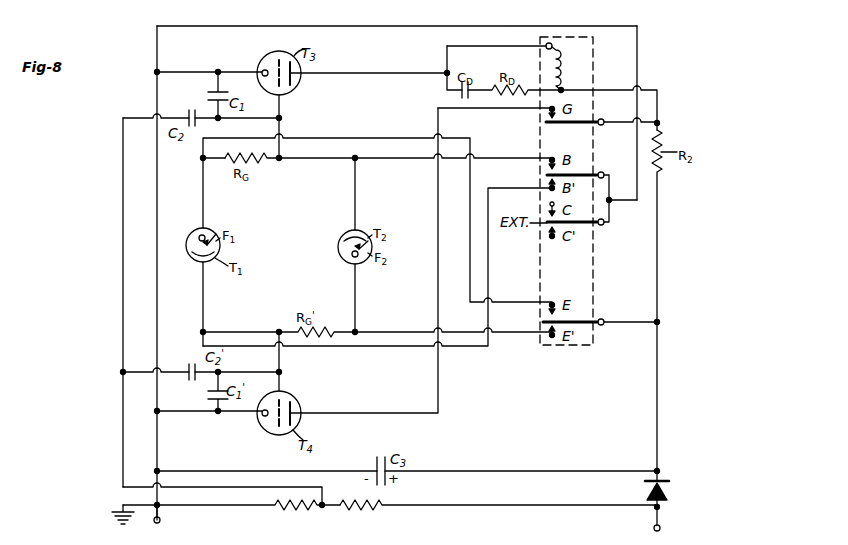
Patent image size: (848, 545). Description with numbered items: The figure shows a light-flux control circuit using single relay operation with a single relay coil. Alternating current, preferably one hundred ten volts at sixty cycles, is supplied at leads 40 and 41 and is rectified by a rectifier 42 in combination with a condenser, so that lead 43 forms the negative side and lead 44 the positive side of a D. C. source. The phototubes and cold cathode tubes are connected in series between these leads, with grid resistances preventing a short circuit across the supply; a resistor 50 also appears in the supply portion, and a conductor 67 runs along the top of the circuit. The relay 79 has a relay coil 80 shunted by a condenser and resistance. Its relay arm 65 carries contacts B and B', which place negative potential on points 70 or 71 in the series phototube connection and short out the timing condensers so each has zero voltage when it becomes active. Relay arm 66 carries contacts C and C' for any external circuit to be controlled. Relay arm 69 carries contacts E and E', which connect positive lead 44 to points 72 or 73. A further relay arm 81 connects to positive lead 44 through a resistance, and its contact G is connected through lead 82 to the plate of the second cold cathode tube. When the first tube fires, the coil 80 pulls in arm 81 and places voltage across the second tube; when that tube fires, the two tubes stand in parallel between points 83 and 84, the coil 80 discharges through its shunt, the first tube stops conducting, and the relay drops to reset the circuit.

The lead 40 is at (160, 520).
The lead 41 is at (660, 526).
The rectifier 42 is at (668, 497).
The lead 43 is at (157, 343).
The lead 44 is at (657, 400).
The resistor 50 is at (343, 510).
The relay arm 65 is at (585, 175).
The relay arm 66 is at (588, 225).
The supply conductor 67 is at (345, 27).
The relay arm 69 is at (588, 325).
The point 70 is at (357, 160).
The point 71 is at (206, 330).
The point 72 is at (200, 158).
The point 73 is at (357, 330).
The relay 79 is at (593, 43).
The relay coil 80 is at (545, 49).
The relay arm 81 is at (580, 121).
The lead 82 is at (438, 402).
The point 83 is at (158, 413).
The point 84 is at (659, 124).